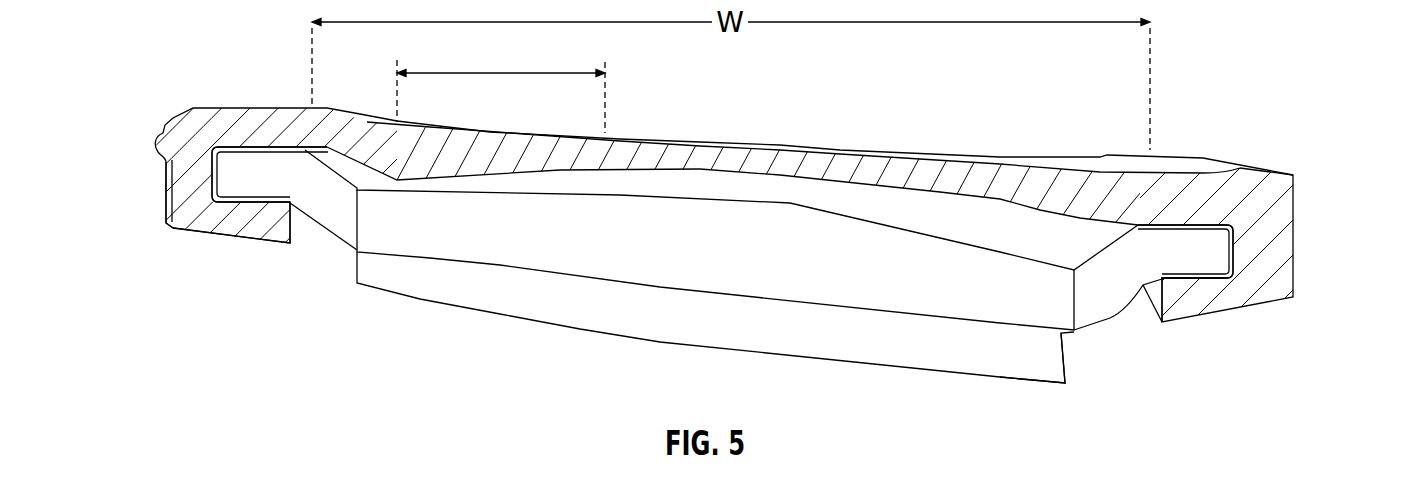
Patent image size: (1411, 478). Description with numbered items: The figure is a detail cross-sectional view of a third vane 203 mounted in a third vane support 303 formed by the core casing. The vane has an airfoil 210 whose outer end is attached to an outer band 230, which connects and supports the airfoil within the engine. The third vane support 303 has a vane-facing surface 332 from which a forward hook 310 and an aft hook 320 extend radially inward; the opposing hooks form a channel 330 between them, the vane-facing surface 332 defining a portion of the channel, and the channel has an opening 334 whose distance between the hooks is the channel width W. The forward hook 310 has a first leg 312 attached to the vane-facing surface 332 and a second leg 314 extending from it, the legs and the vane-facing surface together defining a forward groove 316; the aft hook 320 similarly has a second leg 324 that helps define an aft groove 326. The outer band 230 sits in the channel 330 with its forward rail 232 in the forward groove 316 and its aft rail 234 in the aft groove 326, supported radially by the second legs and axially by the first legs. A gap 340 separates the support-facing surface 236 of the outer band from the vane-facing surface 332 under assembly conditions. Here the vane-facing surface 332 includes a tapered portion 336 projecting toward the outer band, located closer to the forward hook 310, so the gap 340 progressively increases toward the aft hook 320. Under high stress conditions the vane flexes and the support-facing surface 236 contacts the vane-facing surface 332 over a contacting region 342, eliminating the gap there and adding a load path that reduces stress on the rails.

The third vane 203 is at (1027, 360).
The airfoil 210 is at (432, 283).
The outer band 230 is at (567, 247).
The forward rail 232 is at (258, 183).
The aft rail 234 is at (1183, 253).
The support-facing surface 236 is at (937, 234).
The third vane support 303 is at (1028, 184).
The forward hook 310 is at (133, 222).
The first leg 312 is at (190, 178).
The second leg 314 is at (273, 228).
The forward groove 316 is at (240, 168).
The aft hook 320 is at (1300, 270).
The second leg 324 is at (1167, 305).
The aft groove 326 is at (1203, 258).
The channel 330 is at (1032, 236).
The vane-facing surface 332 is at (983, 204).
The opening 334 is at (795, 272).
The tapered portion 336 is at (410, 170).
The gap 340 is at (768, 185).
The contacting region 342 is at (503, 73).